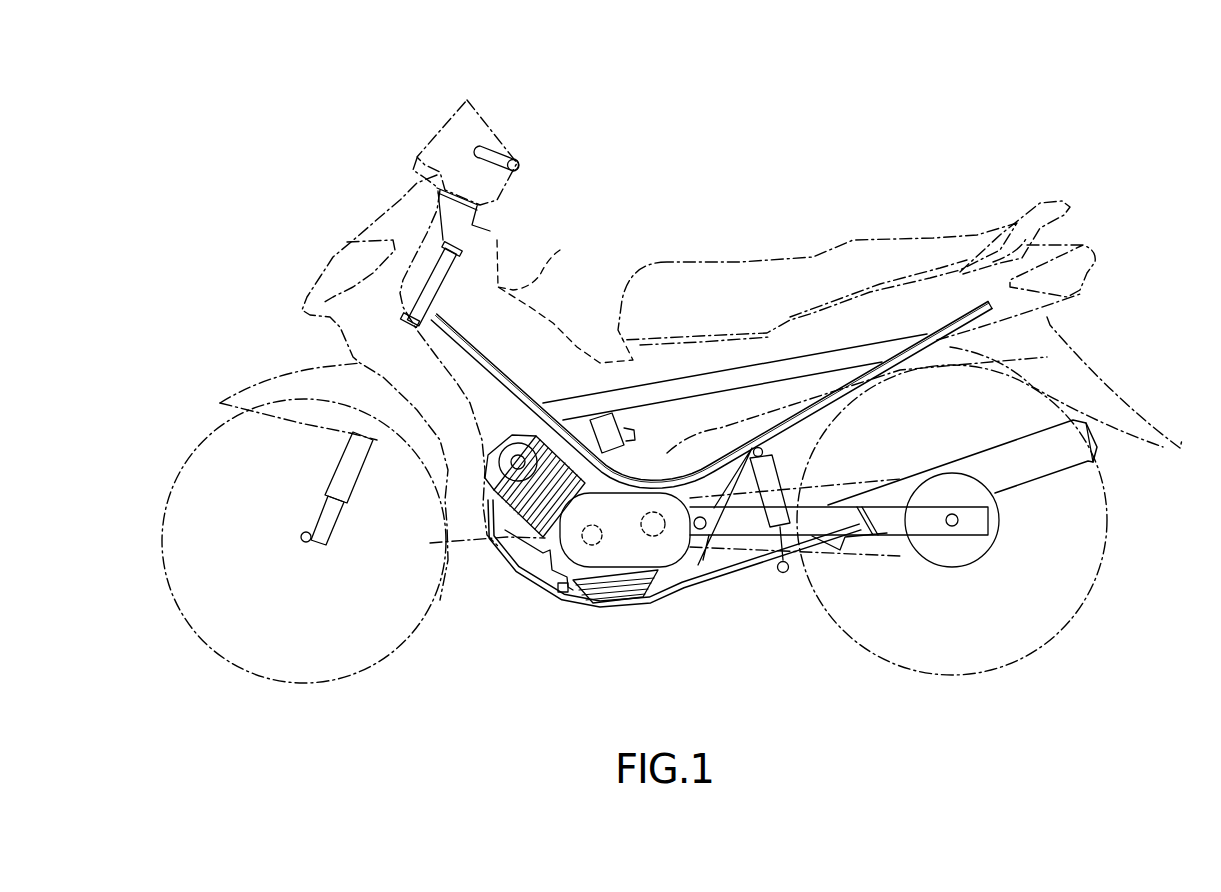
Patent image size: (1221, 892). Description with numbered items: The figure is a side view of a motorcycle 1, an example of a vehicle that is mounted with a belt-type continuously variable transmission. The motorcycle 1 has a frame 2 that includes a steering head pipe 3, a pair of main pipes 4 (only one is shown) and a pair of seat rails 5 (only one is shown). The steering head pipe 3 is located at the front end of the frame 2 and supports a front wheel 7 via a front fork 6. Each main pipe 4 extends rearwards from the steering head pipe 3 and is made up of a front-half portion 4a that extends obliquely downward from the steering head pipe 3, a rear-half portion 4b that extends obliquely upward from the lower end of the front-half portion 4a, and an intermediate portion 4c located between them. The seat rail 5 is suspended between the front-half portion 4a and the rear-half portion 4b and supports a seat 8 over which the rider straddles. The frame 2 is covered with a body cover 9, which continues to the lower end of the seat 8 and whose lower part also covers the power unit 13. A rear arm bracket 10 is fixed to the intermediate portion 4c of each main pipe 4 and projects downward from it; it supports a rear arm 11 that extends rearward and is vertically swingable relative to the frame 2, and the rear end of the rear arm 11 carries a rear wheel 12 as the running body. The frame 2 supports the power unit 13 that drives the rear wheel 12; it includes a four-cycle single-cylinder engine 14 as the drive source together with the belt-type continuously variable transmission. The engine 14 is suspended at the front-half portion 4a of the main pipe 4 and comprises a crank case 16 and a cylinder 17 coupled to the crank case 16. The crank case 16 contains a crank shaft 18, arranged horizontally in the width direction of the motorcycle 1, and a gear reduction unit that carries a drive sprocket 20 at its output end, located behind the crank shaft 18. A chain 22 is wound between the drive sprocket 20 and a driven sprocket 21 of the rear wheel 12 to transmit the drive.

The motorcycle 1 is at (849, 166).
The frame 2 is at (470, 359).
The steering head pipe 3 is at (462, 256).
The main pipe 4 is at (711, 394).
The front-half portion 4a is at (528, 394).
The rear-half portion 4b is at (864, 384).
The intermediate portion 4c is at (640, 478).
The seat rail 5 is at (816, 354).
The front fork 6 is at (334, 471).
The front wheel 7 is at (183, 465).
The seat 8 is at (738, 262).
The body cover 9 is at (565, 295).
The rear arm bracket 10 is at (712, 540).
The rear arm 11 is at (885, 537).
The rear wheel 12 is at (1103, 545).
The power unit 13 is at (555, 580).
The engine 14 is at (533, 553).
The crank case 16 is at (612, 580).
The cylinder 17 is at (503, 531).
The crank shaft 18 is at (591, 546).
The drive sprocket 20 is at (653, 545).
The driven sprocket 21 is at (958, 567).
The chain 22 is at (840, 563).